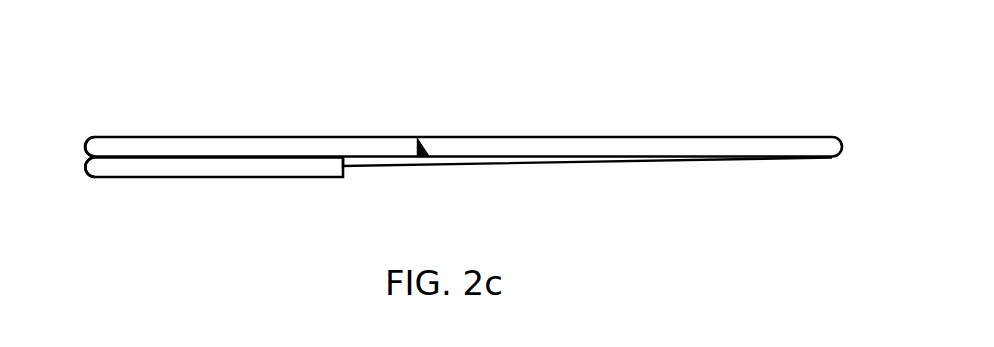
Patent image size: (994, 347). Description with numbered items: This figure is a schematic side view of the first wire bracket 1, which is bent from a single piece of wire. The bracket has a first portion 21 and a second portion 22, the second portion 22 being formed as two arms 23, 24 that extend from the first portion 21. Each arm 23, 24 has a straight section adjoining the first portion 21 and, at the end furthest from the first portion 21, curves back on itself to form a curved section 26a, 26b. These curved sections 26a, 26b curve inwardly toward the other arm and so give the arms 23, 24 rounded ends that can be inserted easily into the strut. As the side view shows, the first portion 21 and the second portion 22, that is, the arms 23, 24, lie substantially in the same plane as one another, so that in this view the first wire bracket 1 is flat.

The first wire bracket 1 is at (447, 123).
The first portion 21 is at (740, 137).
The second portion 22 is at (246, 126).
The arm 23 is at (430, 158).
The arm 24 is at (361, 172).
The curved section 26a is at (130, 136).
The curved section 26b is at (118, 163).